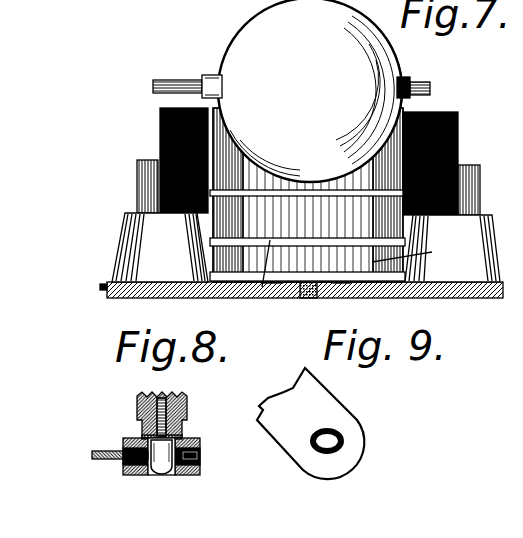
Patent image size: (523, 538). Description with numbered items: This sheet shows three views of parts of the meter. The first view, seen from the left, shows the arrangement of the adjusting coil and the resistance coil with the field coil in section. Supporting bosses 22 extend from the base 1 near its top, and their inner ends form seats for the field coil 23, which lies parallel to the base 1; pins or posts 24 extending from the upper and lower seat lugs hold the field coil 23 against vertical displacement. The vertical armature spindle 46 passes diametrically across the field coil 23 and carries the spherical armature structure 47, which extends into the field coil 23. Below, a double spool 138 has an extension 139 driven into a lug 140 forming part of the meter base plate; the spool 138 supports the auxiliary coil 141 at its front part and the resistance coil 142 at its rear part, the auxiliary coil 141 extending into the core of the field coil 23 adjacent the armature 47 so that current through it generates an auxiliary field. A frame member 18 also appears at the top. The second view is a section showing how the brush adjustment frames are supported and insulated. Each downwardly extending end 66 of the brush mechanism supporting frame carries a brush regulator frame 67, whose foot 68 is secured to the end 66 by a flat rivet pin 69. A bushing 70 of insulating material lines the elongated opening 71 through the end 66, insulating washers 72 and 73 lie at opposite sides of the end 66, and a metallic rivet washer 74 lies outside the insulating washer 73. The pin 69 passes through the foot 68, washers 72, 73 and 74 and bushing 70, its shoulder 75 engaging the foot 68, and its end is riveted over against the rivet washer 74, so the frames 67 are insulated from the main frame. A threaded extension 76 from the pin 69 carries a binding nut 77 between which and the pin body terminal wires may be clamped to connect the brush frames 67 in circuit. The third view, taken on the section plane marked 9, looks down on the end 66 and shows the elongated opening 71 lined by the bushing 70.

In FIG. 7, the base 1 is at (105, 283).
In FIG. 7, the frame member 18 is at (160, 6).
In FIG. 7, the supporting bosses 22 is at (128, 215).
In FIG. 7, the field coil 23 is at (433, 127).
In FIG. 7, the posts 24 is at (140, 175).
In FIG. 7, the armature spindle 46 is at (180, 82).
In FIG. 7, the spherical armature structure 47 is at (310, 91).
In FIG. 7, the double spool 138 is at (262, 287).
In FIG. 7, the extension 139 is at (310, 292).
In FIG. 7, the lug 140 is at (290, 283).
In FIG. 7, the auxiliary coil 141 is at (308, 195).
In FIG. 7, the resistance coil 142 is at (436, 248).
In FIG. 8, the section line 9- 9 is at (77, 463).
In FIG. 8, the ends of the brush mechanism supporting frame 66 is at (105, 460).
In FIG. 9, the ends of the brush mechanism supporting frame 66 is at (357, 452).
In FIG. 8, the brush regulator frame 67 is at (145, 415).
In FIG. 8, the foot 68 is at (130, 448).
In FIG. 8, the rivet pin 69 is at (163, 475).
In FIG. 8, the insulating bushing 70 is at (193, 470).
In FIG. 9, the insulating bushing 70 is at (343, 435).
In FIG. 9, the elongated opening 71 is at (330, 442).
In FIG. 8, the insulating washer 72 is at (127, 447).
In FIG. 8, the insulating washer 73 is at (127, 463).
In FIG. 8, the rivet washer 74 is at (140, 467).
In FIG. 8, the shoulder 75 is at (180, 437).
In FIG. 8, the threaded extension 76 is at (170, 405).
In FIG. 8, the binding nut 77 is at (140, 410).